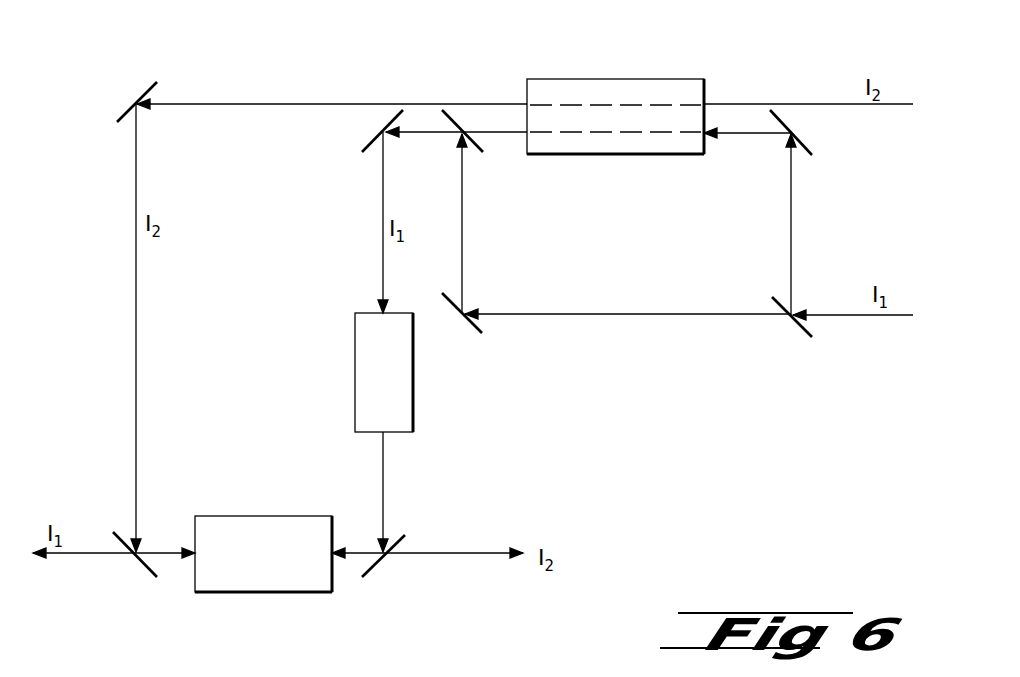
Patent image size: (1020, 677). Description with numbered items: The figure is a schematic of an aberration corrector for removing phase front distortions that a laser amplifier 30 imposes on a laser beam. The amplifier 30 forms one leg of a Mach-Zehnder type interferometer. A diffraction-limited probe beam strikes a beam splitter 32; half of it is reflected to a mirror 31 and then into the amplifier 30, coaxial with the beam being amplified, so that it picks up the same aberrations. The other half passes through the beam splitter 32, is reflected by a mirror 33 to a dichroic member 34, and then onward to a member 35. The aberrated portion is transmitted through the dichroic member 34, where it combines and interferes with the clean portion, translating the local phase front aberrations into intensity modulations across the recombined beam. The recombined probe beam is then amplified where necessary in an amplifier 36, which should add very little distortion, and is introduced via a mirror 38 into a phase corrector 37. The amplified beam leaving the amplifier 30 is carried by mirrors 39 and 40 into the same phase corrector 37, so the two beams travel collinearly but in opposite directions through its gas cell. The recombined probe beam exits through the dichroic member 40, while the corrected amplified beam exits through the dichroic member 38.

The laser amplifier 30 is at (683, 80).
The mirror 31 is at (814, 146).
The beam splitter 32 is at (800, 335).
The mirror 33 is at (476, 333).
The dichroic member 34 is at (476, 150).
The member 35 is at (370, 150).
The amplifier 36 is at (414, 404).
The phase corrector 37 is at (282, 516).
The dichroic member 38 is at (372, 570).
The mirror 39 is at (120, 118).
The dichroic member 40 is at (145, 570).